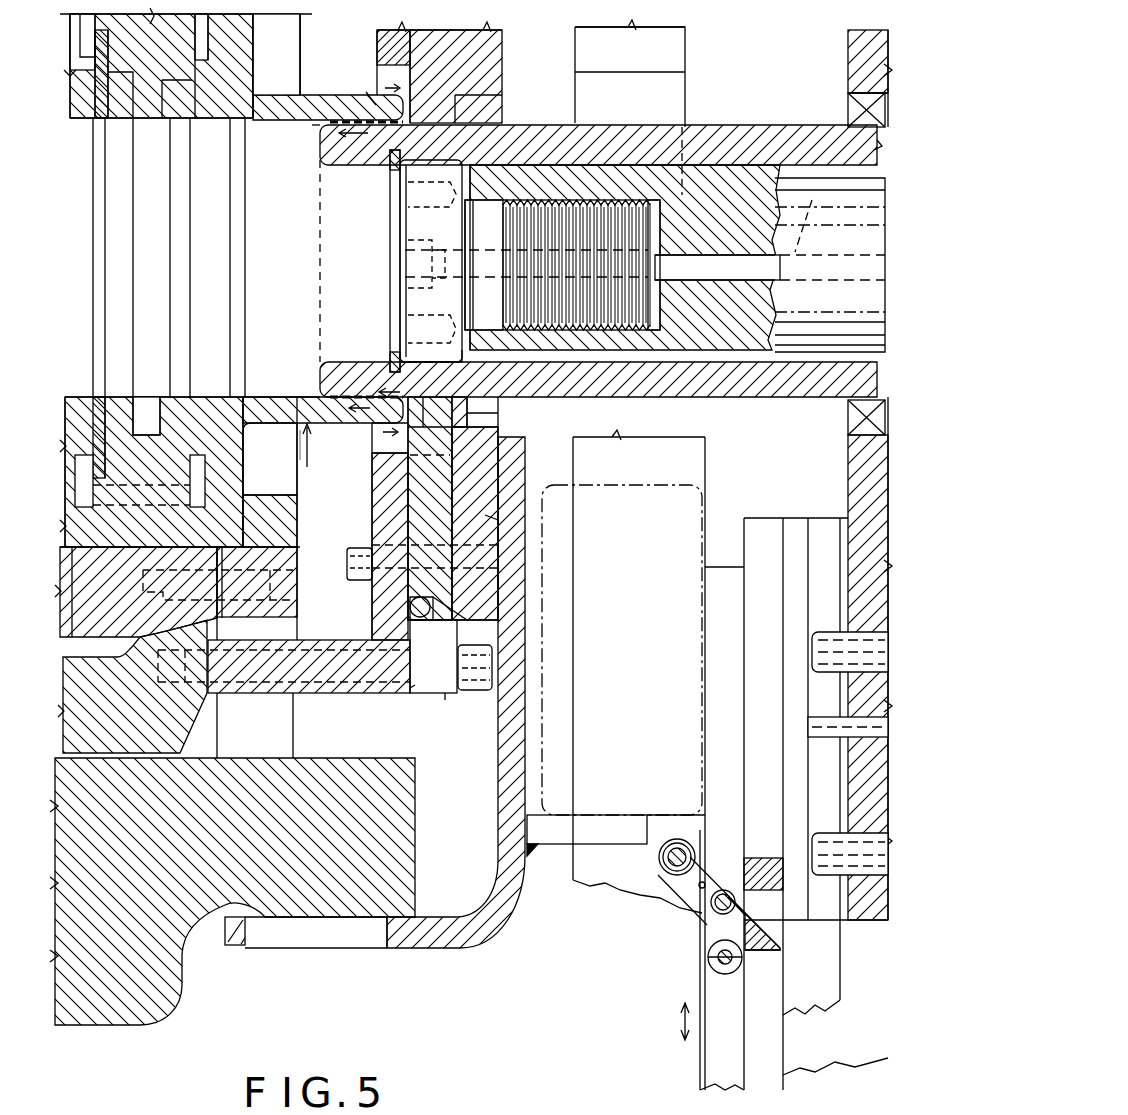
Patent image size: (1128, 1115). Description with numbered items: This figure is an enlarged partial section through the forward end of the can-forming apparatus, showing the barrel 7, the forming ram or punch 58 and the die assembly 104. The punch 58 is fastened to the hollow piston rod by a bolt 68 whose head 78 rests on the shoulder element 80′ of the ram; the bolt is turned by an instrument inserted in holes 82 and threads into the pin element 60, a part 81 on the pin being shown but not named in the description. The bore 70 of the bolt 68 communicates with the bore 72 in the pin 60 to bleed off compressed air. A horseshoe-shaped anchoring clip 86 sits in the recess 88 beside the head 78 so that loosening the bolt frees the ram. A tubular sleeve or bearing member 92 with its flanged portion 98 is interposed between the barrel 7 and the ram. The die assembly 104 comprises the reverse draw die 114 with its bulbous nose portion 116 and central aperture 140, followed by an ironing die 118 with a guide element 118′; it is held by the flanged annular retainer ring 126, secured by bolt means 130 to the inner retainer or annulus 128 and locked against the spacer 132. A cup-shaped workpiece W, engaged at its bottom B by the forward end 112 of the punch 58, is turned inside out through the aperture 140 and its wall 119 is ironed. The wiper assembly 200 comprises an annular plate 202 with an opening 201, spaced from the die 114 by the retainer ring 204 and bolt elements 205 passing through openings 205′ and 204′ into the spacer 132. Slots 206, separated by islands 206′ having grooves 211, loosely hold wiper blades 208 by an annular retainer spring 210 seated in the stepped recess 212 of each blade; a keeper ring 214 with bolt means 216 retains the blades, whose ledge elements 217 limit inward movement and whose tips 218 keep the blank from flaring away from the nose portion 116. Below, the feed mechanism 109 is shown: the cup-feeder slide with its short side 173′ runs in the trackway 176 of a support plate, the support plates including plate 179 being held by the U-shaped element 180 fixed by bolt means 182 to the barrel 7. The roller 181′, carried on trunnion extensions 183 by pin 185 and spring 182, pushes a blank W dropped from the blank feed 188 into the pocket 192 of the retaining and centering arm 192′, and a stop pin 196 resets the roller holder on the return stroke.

The die assembly 104 is at (150, 80).
The central aperture 140 is at (312, 125).
The wall 119 is at (580, 815).
The wiper assembly 200 is at (506, 51).
The retainer ring 204 is at (455, 112).
The openings 204′ is at (282, 695).
The pocket 192 is at (685, 93).
The retaining and centering arm 192′ is at (682, 50).
The tubular sleeve or bearing member 92 is at (852, 36).
The flanged portion 98 is at (858, 72).
The pin element 60 is at (619, 186).
The forming ram 58 is at (688, 124).
The head 78 is at (455, 168).
The bore 70 is at (500, 200).
The bore 72 is at (800, 205).
The holes 82 is at (415, 195).
The bolt 68 is at (388, 246).
The pin 81 is at (480, 320).
The anchoring clip 86 is at (392, 360).
The recess 88 is at (400, 373).
The wiping tips 218 is at (476, 372).
The shoulder element 80′ is at (518, 370).
The guide element 118′ is at (133, 395).
The forward end 112 is at (318, 380).
The bulbous nose portion 116 is at (318, 396).
The ironing die 118 is at (181, 446).
The opening 201 is at (372, 442).
The reverse draw die 114 is at (320, 452).
The bolt means 216 is at (370, 550).
The wiper blades 208 is at (510, 462).
The keeper ring 214 is at (485, 515).
The slots 206 is at (435, 548).
The stepped recess 212 is at (432, 600).
The annular retainer spring 210 is at (428, 612).
The ledge element 217 is at (622, 588).
The islands 206′ is at (498, 663).
The annular plate 202 is at (378, 622).
The inner retainer 128 is at (282, 594).
The bolt means 130 is at (165, 606).
The flanged annular retainer ring 126 is at (85, 625).
The grooves 211 is at (412, 690).
The openings 205′ is at (425, 695).
The bolt elements 205 is at (449, 704).
The spacer 132 is at (122, 760).
The bolt means 182 is at (845, 670).
The short side 173′ is at (785, 866).
The roller 181′ is at (658, 857).
The support plate 179 is at (670, 898).
The trunnion extensions 183 is at (700, 915).
The pin 185 is at (722, 926).
The feed assembly 109 is at (687, 961).
The stop pin 196 is at (716, 972).
The trackway 176 is at (748, 1040).
The blank feed 188 is at (422, 960).
The U-shaped element 180 is at (835, 975).
The barrel 7 is at (885, 988).
The workpiece W is at (632, 645).
The bottom B is at (320, 268).